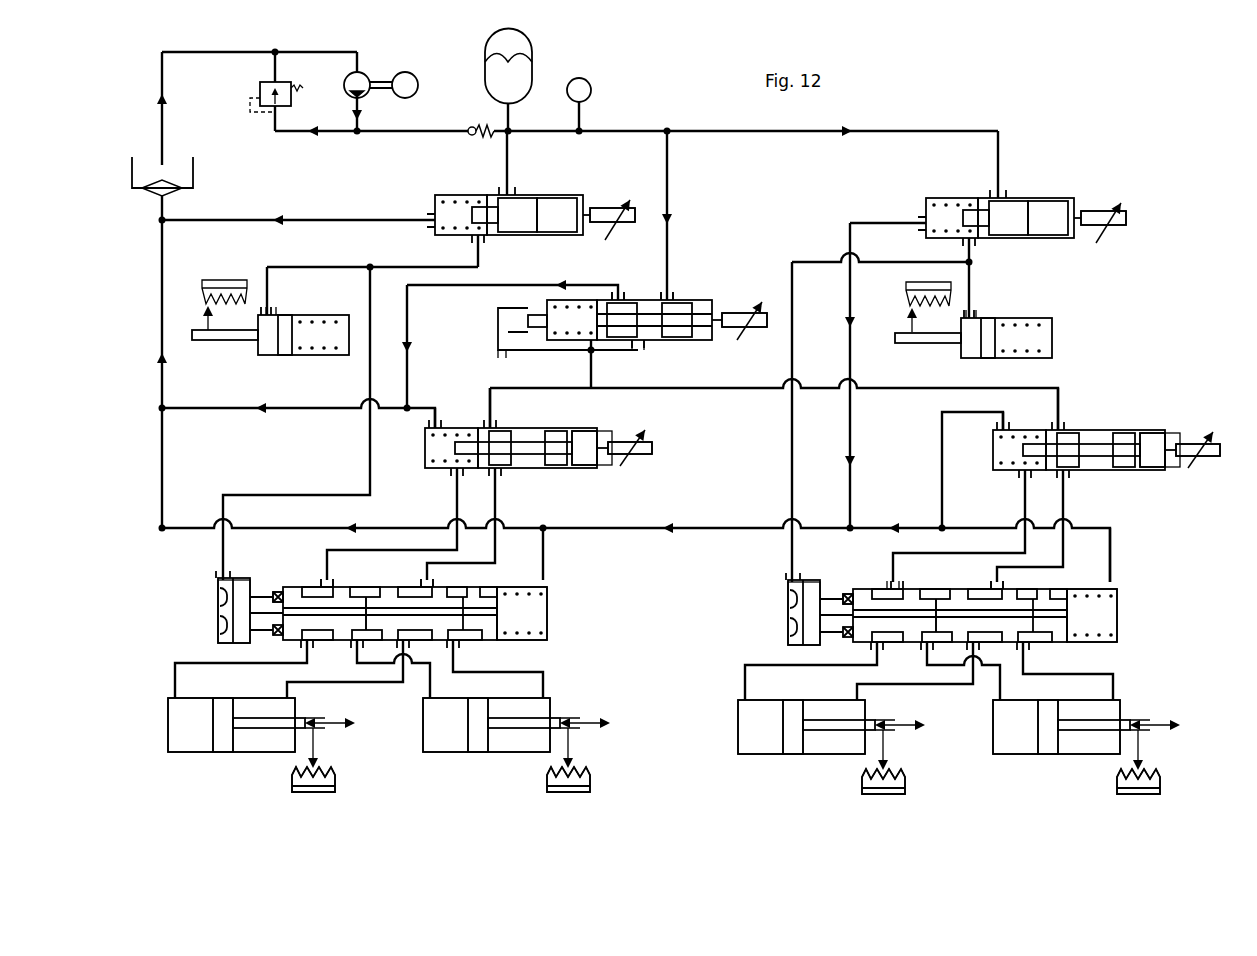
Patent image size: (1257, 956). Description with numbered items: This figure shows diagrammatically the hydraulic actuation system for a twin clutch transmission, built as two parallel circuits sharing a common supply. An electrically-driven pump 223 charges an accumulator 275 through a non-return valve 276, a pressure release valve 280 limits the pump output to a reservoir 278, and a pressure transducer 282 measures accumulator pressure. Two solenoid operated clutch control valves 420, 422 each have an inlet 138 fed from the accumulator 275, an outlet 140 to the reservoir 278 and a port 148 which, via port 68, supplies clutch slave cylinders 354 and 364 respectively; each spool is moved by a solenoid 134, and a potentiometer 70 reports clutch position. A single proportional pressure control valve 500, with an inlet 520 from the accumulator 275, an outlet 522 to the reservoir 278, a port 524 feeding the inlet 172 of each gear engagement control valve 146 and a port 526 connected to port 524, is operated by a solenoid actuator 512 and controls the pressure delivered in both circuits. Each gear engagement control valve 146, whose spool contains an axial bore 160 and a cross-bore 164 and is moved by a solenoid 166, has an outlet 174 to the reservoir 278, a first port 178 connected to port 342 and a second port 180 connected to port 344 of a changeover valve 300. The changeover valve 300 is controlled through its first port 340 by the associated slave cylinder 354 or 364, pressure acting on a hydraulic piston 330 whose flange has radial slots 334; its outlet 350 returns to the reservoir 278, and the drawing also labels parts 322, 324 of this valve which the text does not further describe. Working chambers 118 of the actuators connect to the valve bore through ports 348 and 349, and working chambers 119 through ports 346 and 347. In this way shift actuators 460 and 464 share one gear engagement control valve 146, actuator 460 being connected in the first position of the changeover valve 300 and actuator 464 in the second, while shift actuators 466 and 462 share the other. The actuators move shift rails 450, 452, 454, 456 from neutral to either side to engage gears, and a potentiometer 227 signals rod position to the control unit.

The port 68 is at (268, 314).
The potentiometer 70 is at (210, 284).
The working chambers 118 is at (268, 755).
The working chambers 119 is at (178, 738).
The solenoid 134 is at (640, 196).
The inlet 138 is at (512, 194).
The outlet 140 is at (434, 217).
The gear engagement control valve 146 is at (617, 486).
The port 148 is at (486, 247).
The axial bore 160 is at (442, 452).
The cross-bore 164 is at (566, 466).
The solenoid 166 is at (650, 443).
The inlet 172 is at (493, 428).
The outlet 174 is at (438, 427).
The first port 178 is at (455, 472).
The second port 180 is at (497, 472).
The pump 223 is at (398, 75).
The potentiometer 227 is at (337, 784).
The accumulator 275 is at (522, 48).
The non-return valve 276 is at (472, 138).
The reservoir 278 is at (178, 161).
The pressure release valve 280 is at (258, 93).
The pressure transducer 282 is at (590, 86).
The changeover valve 300 is at (212, 596).
The valve port 322 is at (464, 598).
The spool land 324 is at (367, 600).
The hydraulic piston 330 is at (226, 614).
The slots 334 is at (275, 592).
The first port 340 is at (220, 578).
The port 342 is at (325, 578).
The port 344 is at (425, 580).
The port 346 is at (300, 654).
The port 347 is at (352, 649).
The port 348 is at (411, 650).
The port 349 is at (456, 649).
The outlet 350 is at (552, 580).
The clutch slave cylinder 354 is at (262, 357).
The clutch slave cylinder 364 is at (1054, 347).
The clutch control valve 420 is at (588, 188).
The clutch control valve 422 is at (1092, 178).
The shift rail 450 is at (325, 722).
The shift rail 452 is at (1140, 725).
The shift rail 454 is at (572, 722).
The shift rail 456 is at (885, 725).
The shift actuator 460 is at (215, 755).
The shift actuator 462 is at (1036, 757).
The shift actuator 464 is at (472, 755).
The shift actuator 466 is at (780, 757).
The proportional pressure control valve 500 is at (486, 346).
The solenoid actuator 512 is at (743, 329).
The inlet 520 is at (620, 297).
The outlet 522 is at (672, 297).
The port 524 is at (640, 350).
The port 526 is at (502, 352).